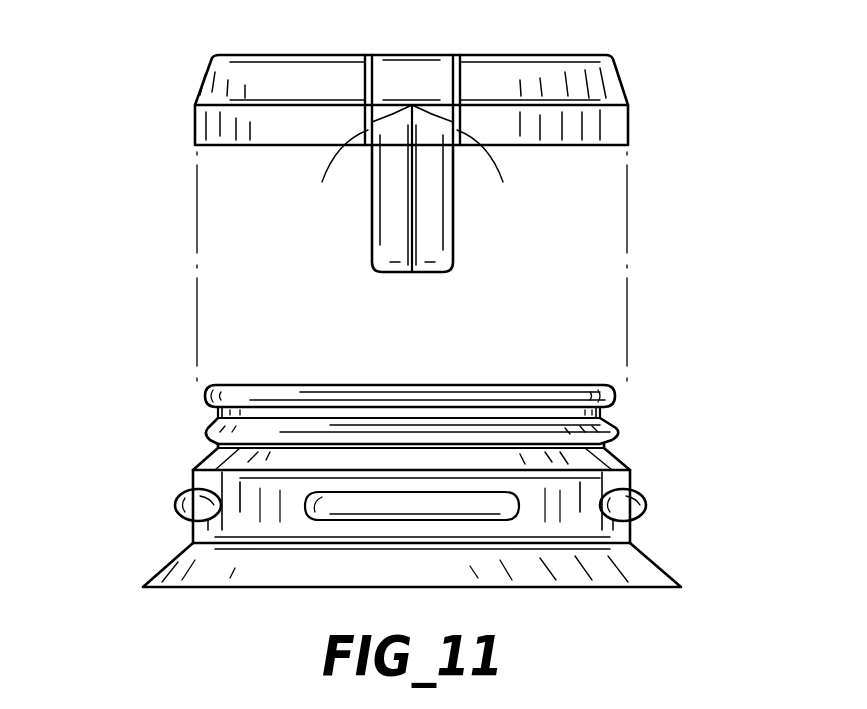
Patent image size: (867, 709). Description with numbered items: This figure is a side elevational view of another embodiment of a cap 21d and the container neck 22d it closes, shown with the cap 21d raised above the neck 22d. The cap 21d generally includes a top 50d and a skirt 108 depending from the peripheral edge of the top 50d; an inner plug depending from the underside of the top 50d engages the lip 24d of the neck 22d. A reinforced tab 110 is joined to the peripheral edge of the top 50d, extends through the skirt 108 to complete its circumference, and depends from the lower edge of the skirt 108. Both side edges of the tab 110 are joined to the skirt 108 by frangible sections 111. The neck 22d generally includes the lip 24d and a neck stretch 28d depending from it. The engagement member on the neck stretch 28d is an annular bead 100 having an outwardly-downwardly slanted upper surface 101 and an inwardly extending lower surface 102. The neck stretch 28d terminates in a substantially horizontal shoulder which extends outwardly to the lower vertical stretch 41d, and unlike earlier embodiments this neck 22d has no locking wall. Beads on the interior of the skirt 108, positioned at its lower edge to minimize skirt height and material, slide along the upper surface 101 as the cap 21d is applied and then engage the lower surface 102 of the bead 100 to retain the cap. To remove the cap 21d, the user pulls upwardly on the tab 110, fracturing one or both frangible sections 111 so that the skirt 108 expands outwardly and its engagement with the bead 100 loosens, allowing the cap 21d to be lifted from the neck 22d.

The cap 21d is at (520, 50).
The skirt 108 is at (275, 85).
The top 50d is at (350, 55).
The reinforced tab 110 is at (397, 242).
The frangible section 111 is at (423, 195).
The neck 22d is at (543, 372).
The lip 24d is at (272, 385).
The annular bead 100 is at (425, 428).
The upper surface 101 is at (612, 420).
The neck stretch 28d is at (217, 410).
The lower surface 102 is at (613, 447).
The lower vertical stretch 41d is at (193, 530).